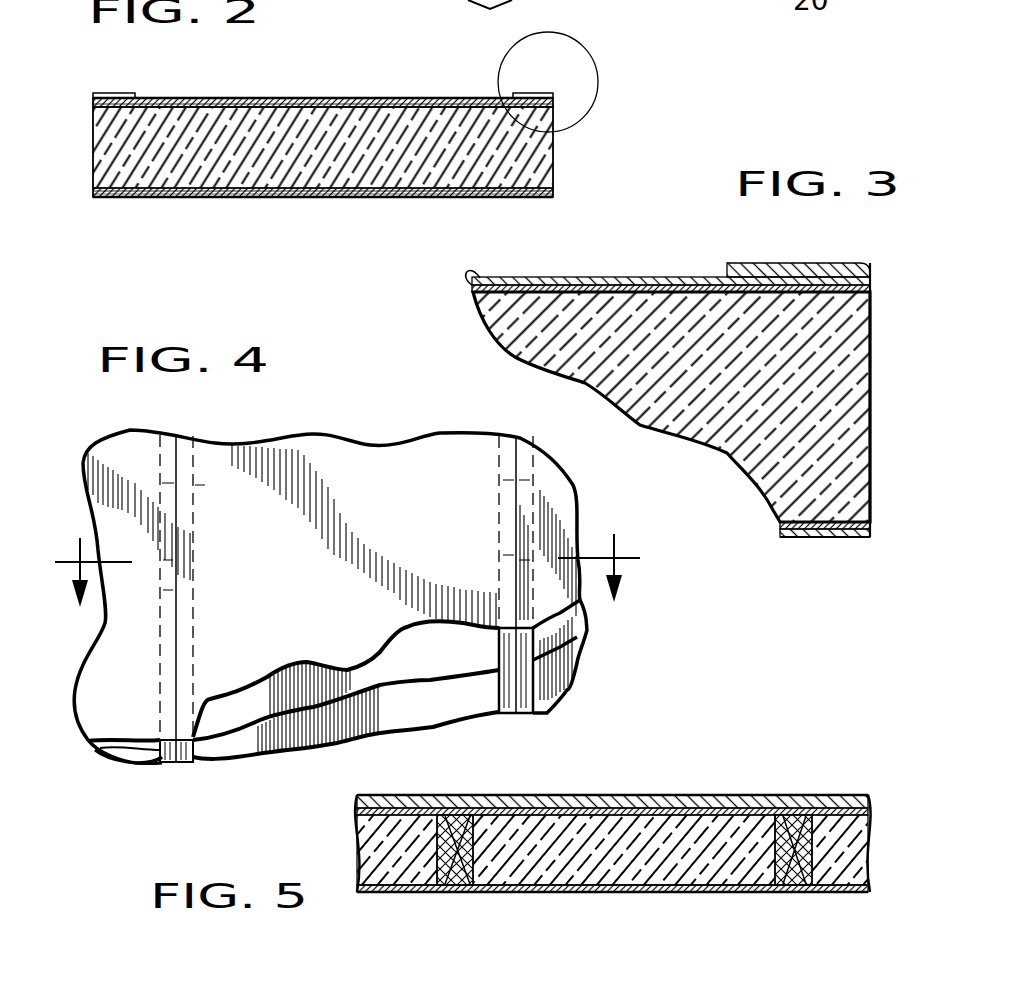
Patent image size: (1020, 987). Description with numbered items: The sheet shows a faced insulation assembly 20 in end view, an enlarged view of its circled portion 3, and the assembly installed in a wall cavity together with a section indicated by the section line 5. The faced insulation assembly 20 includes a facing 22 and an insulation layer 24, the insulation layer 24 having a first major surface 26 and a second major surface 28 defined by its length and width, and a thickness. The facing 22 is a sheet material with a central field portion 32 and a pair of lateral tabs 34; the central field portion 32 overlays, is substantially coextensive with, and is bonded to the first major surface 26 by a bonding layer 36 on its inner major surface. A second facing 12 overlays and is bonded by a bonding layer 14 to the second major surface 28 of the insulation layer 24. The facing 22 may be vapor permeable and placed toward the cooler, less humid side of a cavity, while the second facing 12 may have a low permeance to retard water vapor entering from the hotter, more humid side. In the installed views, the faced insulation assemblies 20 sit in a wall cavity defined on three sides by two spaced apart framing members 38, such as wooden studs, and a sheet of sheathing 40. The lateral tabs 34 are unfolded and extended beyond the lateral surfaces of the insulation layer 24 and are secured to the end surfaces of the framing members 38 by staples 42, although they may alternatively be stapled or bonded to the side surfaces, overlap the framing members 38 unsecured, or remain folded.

In FIG. 2, the detail circle of FIG. 3 is at (592, 65).
In FIG. 4, the section line 5- 5 is at (347, 567).
In FIG. 2, the second facing 12 is at (386, 198).
In FIG. 3, the second facing 12 is at (813, 538).
In FIG. 5, the second facing 12 is at (716, 808).
In FIG. 2, the bonding layer 14 is at (351, 190).
In FIG. 3, the bonding layer 14 is at (779, 512).
In FIG. 5, the bonding layer 14 is at (691, 818).
In FIG. 2, the faced insulation assembly 20 is at (283, 76).
In FIG. 4, the faced insulation assembly 20 is at (120, 470).
In FIG. 5, the faced insulation assembly 20 is at (396, 910).
In FIG. 2, the facing 22 is at (390, 90).
In FIG. 3, the facing 22 is at (637, 252).
In FIG. 5, the facing 22 is at (376, 893).
In FIG. 2, the insulation layer 24 is at (347, 155).
In FIG. 3, the insulation layer 24 is at (792, 397).
In FIG. 4, the insulation layer 24 is at (466, 667).
In FIG. 5, the insulation layer 24 is at (428, 861).
In FIG. 2, the first major surface 26 is at (200, 99).
In FIG. 3, the first major surface 26 is at (468, 275).
In FIG. 2, the second major surface 28 is at (291, 198).
In FIG. 2, the central field portion 32 is at (321, 104).
In FIG. 3, the central field portion 32 is at (679, 283).
In FIG. 2, the lateral tabs 34 is at (132, 61).
In FIG. 3, the lateral tabs 34 is at (809, 268).
In FIG. 5, the lateral tabs 34 is at (469, 893).
In FIG. 2, the bonding layer 36 is at (423, 108).
In FIG. 3, the bonding layer 36 is at (568, 290).
In FIG. 4, the framing members 38 is at (202, 452).
In FIG. 5, the framing members 38 is at (459, 815).
In FIG. 4, the sheathing 40 is at (448, 717).
In FIG. 5, the sheathing 40 is at (606, 796).
In FIG. 4, the staples 42 is at (180, 488).